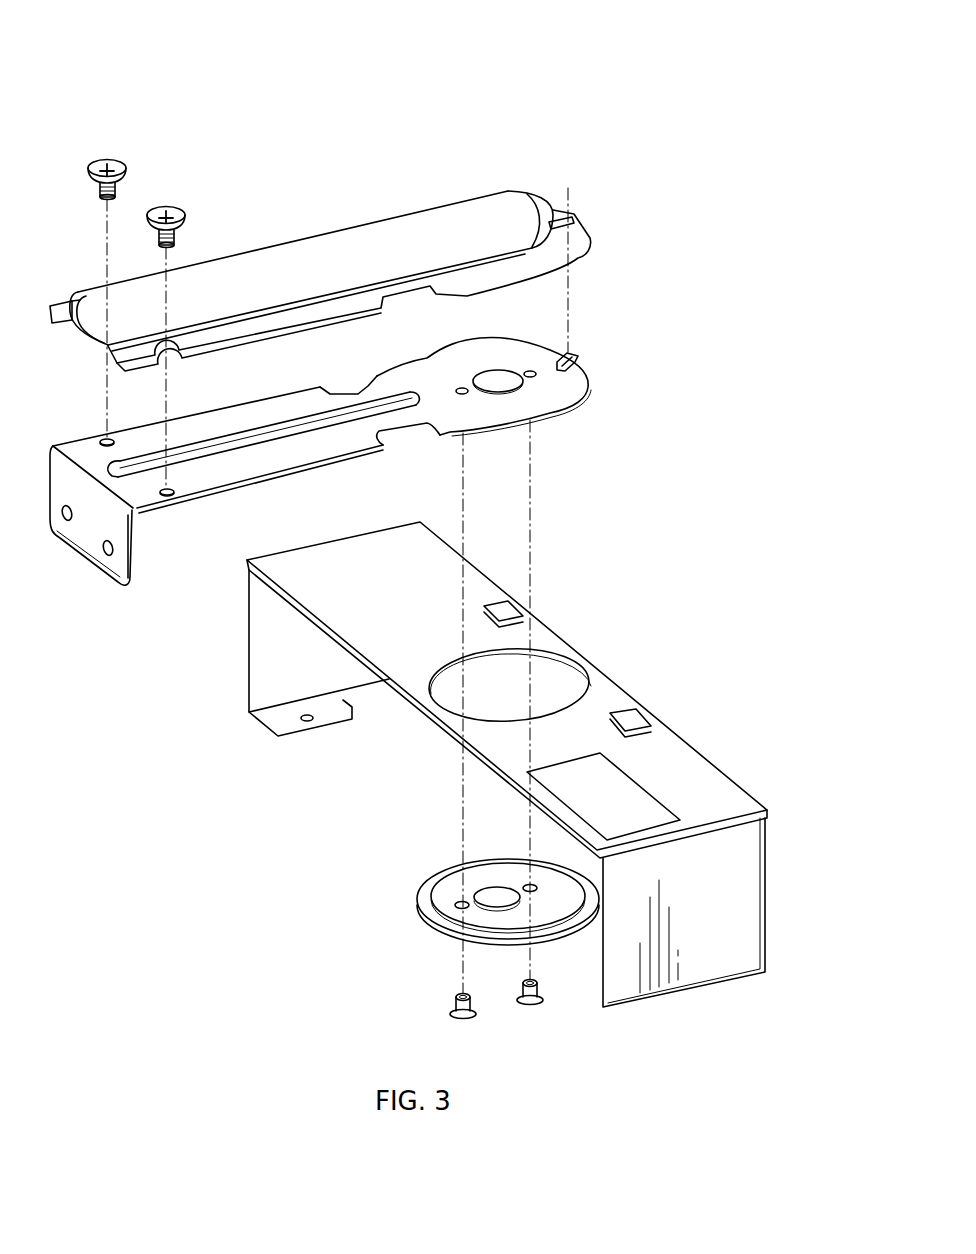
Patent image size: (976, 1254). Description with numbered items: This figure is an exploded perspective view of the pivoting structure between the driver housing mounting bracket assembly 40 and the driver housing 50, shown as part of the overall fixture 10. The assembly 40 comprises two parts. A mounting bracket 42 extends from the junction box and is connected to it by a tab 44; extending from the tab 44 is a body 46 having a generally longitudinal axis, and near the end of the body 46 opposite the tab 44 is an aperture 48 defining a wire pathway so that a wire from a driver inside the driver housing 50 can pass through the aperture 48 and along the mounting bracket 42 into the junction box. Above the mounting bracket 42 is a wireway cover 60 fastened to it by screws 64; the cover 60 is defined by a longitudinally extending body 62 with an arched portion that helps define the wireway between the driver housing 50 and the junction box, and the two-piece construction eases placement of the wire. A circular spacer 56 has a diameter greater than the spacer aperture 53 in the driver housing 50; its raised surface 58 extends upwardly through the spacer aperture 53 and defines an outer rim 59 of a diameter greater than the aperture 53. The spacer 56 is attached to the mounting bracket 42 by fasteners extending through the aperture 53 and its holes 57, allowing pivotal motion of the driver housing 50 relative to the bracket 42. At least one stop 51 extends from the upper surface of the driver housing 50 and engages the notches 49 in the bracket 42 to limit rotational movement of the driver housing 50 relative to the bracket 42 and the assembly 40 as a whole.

The mounting assembly 10 is at (131, 53).
The driver housing mounting bracket assembly 40 is at (597, 182).
The mounting bracket 42 is at (582, 414).
The tab 44 is at (128, 557).
The body 46 is at (223, 472).
The aperture 48 is at (507, 370).
The notches 49 is at (366, 388).
The driver housing 50 is at (638, 622).
The stop 51 is at (497, 608).
The spacer aperture 53 is at (563, 657).
The spacer 56 is at (408, 876).
The fastener holes 57 is at (510, 884).
The raised surface 58 is at (572, 906).
The outer rim 59 is at (430, 922).
The wireway cover 60 is at (424, 162).
The longitudinally extending body 62 is at (320, 247).
The screws 64 is at (126, 172).